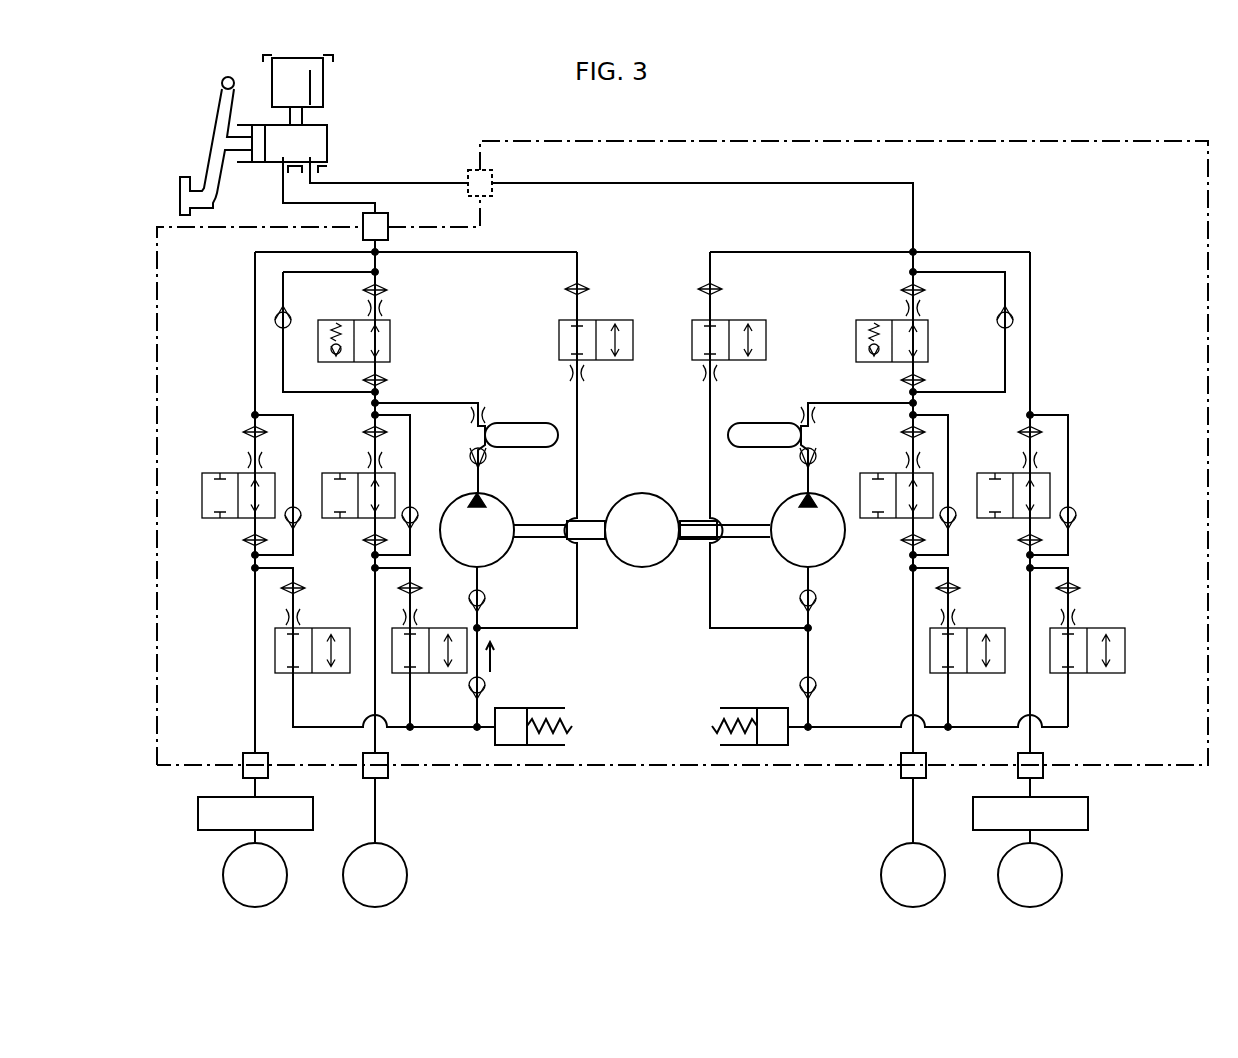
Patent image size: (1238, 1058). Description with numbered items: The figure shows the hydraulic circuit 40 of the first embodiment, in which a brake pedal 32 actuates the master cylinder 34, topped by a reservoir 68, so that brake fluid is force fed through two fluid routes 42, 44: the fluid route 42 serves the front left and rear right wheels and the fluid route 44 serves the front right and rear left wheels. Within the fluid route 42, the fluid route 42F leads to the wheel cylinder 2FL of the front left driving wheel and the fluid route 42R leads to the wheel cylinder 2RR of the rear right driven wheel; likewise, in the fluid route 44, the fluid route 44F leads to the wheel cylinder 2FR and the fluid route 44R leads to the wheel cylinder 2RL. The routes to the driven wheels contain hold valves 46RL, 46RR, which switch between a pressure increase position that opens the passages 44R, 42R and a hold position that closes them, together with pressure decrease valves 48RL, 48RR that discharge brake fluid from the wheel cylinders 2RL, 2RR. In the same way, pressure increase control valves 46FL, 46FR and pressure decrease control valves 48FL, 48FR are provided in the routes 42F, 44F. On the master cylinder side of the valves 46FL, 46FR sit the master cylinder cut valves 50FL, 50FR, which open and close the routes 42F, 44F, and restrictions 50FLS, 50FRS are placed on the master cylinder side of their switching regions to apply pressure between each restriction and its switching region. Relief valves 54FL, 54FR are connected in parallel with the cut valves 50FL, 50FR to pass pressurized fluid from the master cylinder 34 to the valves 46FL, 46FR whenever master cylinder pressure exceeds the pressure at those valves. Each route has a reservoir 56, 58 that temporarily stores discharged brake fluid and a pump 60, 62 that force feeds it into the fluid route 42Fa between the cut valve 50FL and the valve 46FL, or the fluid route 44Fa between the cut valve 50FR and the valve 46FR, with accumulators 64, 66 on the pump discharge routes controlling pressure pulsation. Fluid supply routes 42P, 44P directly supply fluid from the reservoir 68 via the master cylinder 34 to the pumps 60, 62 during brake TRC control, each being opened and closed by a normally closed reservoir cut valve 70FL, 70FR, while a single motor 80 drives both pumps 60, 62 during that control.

The reservoir 68 is at (325, 80).
The master cylinder 34 is at (328, 143).
The brake pedal 32 is at (183, 177).
The hydraulic circuit 40 is at (1048, 138).
The fluid route 42 is at (598, 261).
The fluid route 44 is at (1048, 262).
The fluid route 42F is at (378, 264).
The fluid route 44F is at (910, 262).
The relief valve 54FL is at (276, 312).
The relief valve 54FR is at (997, 316).
The restriction 50FLS is at (391, 312).
The restriction 50FRS is at (898, 312).
The reservoir cut valve 70FL is at (559, 326).
The reservoir cut valve 70FR is at (740, 313).
The fluid route 42R is at (255, 345).
The fluid route 44R is at (1032, 350).
The master cylinder cut valve 50FL is at (392, 340).
The master cylinder cut valve 50FR is at (922, 358).
The fluid route 42Fa is at (375, 414).
The fluid route 44Fa is at (912, 408).
The hold valve 46RR is at (210, 463).
The pressure increase control valve 46FL is at (328, 463).
The pressure increase control valve 46FR is at (865, 463).
The hold valve 46RL is at (980, 463).
The accumulator 64 is at (518, 423).
The accumulator 66 is at (770, 423).
The pump 60 is at (507, 508).
The pump 62 is at (778, 508).
The motor 80 is at (642, 493).
The fluid supply route 42P is at (578, 460).
The fluid supply route 44P is at (709, 460).
The pressure decrease valve 48RR is at (315, 673).
The pressure decrease control valve 48FL is at (434, 673).
The pressure decrease control valve 48FR is at (971, 673).
The pressure decrease valve 48RL is at (1090, 673).
The reservoir 56 is at (513, 708).
The reservoir 58 is at (772, 708).
The wheel cylinder 2RR is at (228, 870).
The wheel cylinder 2FL is at (405, 868).
The wheel cylinder 2FR is at (883, 868).
The wheel cylinder 2RL is at (1058, 868).